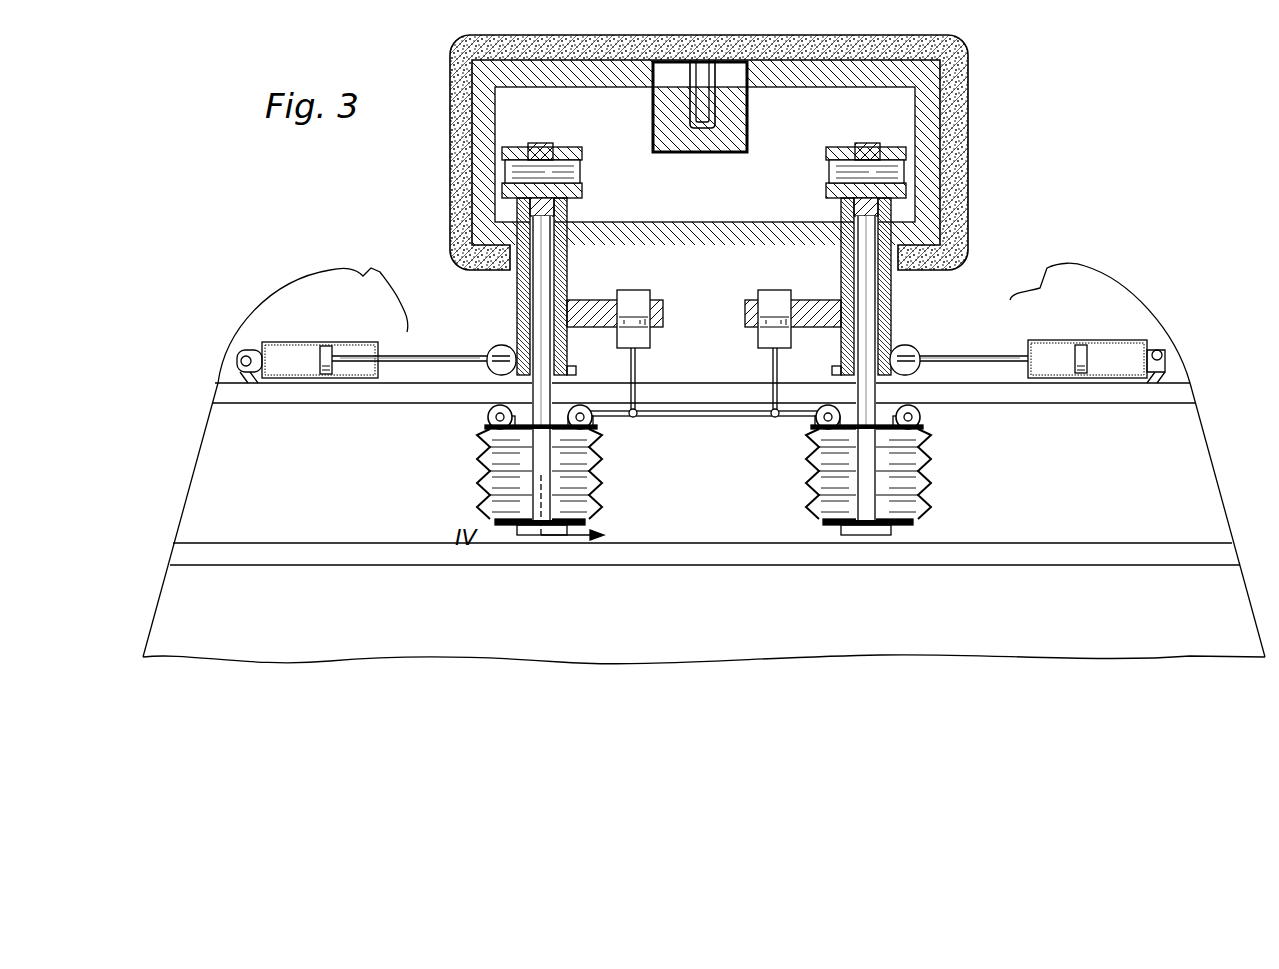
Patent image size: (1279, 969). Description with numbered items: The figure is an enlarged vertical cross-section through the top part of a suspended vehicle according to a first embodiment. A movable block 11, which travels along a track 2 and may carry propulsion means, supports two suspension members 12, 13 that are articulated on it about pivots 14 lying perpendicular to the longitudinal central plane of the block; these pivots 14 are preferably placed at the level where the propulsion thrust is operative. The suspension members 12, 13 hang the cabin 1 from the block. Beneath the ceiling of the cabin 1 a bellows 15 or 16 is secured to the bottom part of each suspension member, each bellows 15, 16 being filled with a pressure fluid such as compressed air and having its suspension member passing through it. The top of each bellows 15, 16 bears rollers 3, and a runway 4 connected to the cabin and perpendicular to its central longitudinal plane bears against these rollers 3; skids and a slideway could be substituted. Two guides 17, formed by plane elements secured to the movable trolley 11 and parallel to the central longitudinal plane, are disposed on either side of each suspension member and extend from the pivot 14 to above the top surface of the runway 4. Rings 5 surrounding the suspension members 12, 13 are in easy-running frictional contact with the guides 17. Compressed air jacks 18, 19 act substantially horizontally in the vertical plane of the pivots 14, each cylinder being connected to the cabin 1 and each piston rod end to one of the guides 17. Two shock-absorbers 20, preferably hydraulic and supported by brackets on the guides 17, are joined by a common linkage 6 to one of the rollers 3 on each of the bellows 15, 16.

The cabin 1 is at (1214, 460).
The track 2 is at (978, 104).
The rollers 3 is at (488, 418).
The runway 4 is at (1190, 384).
The rings 5 is at (530, 243).
The common linkage 6 is at (709, 420).
The movable block 11 is at (845, 70).
The suspension member 12 is at (537, 288).
The suspension member 13 is at (868, 323).
The pivots 14 is at (570, 168).
The bellows 15 is at (475, 462).
The bellows 16 is at (930, 480).
The guides 17 is at (568, 268).
The compressed air jack 18 is at (325, 345).
The compressed air jack 19 is at (1065, 340).
The shock-absorbers 20 is at (753, 338).